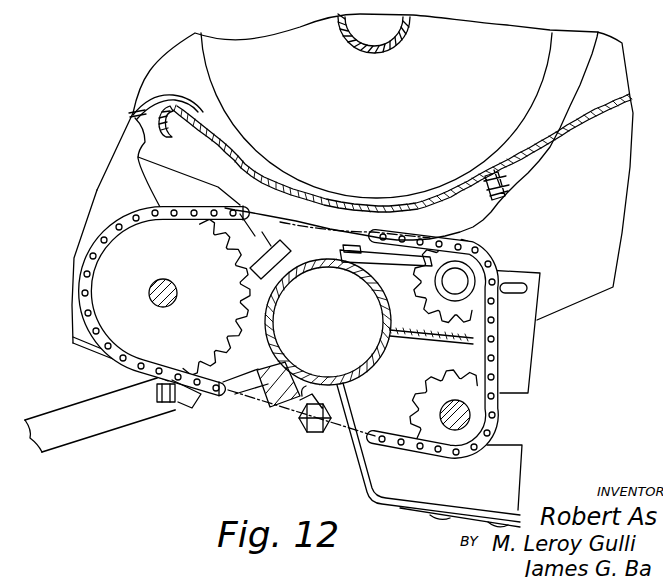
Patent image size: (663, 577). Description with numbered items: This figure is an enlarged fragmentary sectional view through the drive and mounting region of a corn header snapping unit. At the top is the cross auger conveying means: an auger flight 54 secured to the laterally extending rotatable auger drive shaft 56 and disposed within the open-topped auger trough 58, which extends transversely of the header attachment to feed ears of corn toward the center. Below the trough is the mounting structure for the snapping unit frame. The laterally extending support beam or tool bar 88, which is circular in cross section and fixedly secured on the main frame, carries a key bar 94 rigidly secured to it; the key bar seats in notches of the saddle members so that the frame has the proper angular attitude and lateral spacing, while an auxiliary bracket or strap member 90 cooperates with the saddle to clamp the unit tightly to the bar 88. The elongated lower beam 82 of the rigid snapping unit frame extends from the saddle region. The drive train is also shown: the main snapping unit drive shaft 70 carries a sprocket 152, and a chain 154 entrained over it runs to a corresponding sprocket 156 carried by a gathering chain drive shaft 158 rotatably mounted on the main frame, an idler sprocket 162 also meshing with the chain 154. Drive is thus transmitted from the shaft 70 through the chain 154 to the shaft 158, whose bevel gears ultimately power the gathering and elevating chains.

The auger flight 54 is at (241, 43).
The auger drive shaft 56 is at (380, 50).
The auger trough 58 is at (423, 198).
The main snapping unit drive shaft 70 is at (472, 419).
The lower beam 82 is at (75, 435).
The support beam or tool bar 88 is at (258, 400).
The auxiliary bracket or strap member 90 is at (295, 414).
The key bar 94 is at (283, 282).
The sprocket 152 is at (480, 385).
The chain 154 is at (497, 337).
The sprocket 156 is at (103, 302).
The gathering chain drive shaft 158 is at (167, 280).
The idler sprocket 162 is at (447, 257).